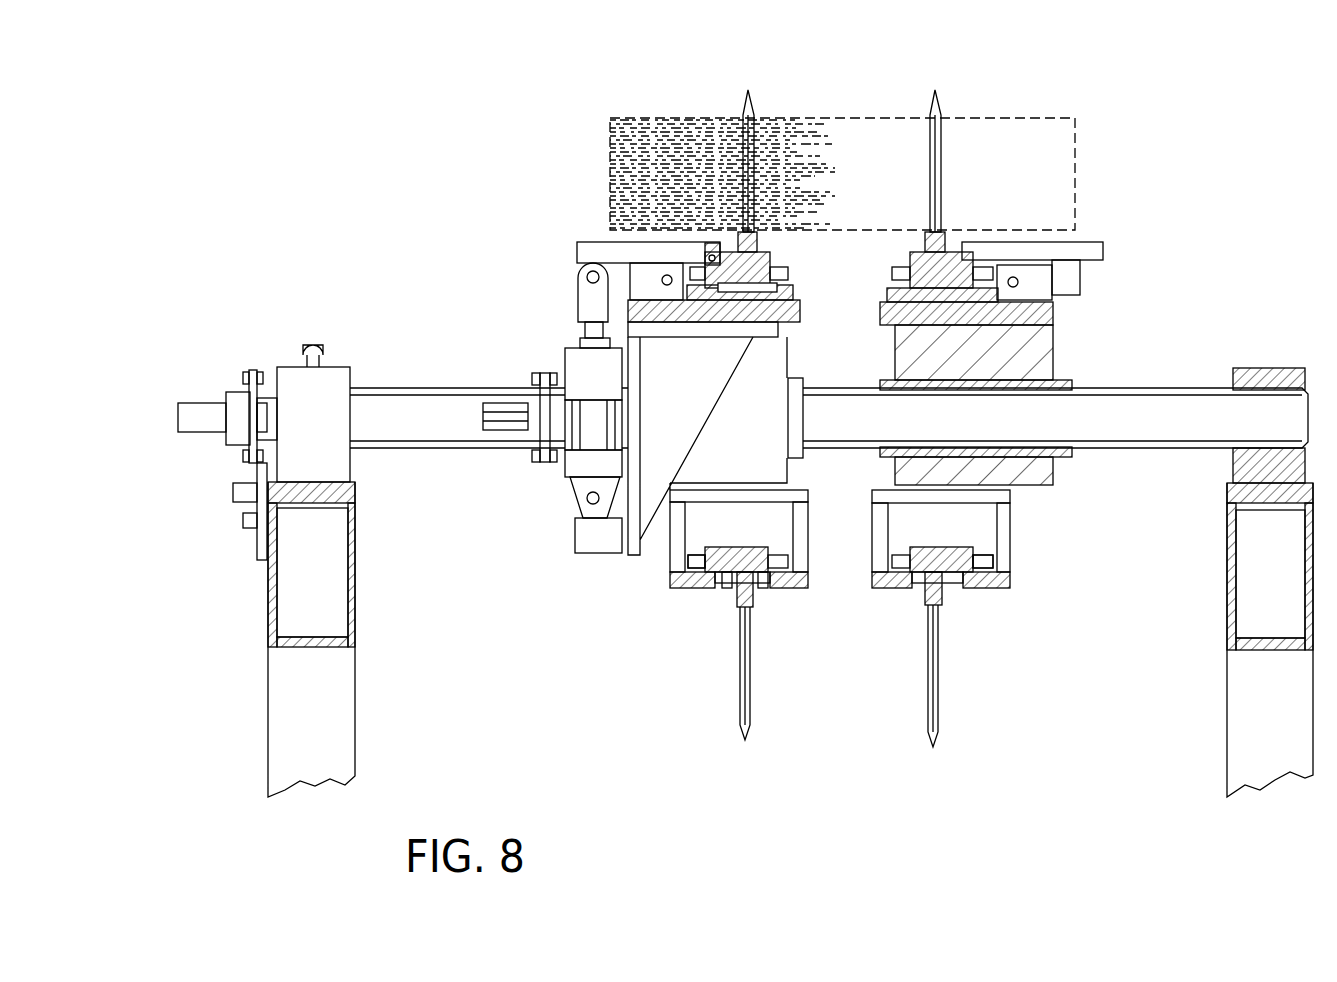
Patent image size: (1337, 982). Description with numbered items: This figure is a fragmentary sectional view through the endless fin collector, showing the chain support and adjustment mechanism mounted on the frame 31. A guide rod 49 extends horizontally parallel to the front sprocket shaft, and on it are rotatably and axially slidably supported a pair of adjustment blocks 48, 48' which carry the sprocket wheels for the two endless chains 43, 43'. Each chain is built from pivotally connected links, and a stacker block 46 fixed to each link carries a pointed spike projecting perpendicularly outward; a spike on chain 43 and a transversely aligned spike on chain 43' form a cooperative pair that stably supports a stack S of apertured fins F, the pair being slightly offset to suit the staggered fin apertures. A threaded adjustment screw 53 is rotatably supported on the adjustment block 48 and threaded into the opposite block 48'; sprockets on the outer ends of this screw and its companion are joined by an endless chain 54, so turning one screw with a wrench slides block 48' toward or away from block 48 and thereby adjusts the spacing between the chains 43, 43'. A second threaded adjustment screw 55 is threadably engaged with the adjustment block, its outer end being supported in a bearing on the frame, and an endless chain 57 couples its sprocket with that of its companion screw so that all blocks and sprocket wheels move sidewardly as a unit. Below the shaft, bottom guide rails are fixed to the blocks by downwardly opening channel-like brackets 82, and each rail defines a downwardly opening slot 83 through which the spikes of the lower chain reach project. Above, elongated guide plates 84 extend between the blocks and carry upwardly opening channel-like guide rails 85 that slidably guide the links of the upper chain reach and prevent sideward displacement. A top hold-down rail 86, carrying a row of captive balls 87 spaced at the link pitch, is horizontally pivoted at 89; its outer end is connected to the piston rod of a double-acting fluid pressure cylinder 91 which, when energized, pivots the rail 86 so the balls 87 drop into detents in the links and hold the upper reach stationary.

The frame 31 is at (1245, 708).
The endless chain 43 is at (691, 643).
The endless chain 43' is at (988, 616).
The stacker block 46 is at (929, 594).
The adjustment block 48 is at (737, 446).
The adjustment block 48' is at (1002, 393).
The guide rod 49 is at (1160, 400).
The threaded adjustment screw 53 is at (532, 427).
The endless chain 54 is at (545, 467).
The threaded adjustment screw 55 is at (210, 410).
The endless chain 57 is at (252, 377).
The channel-like bracket 82 is at (764, 531).
The slot 83 is at (717, 583).
The guide plate 84 is at (882, 318).
The guide rail 85 is at (785, 293).
The top hold-down rail 86 is at (590, 247).
The ball 87 is at (712, 257).
The pivot 89 is at (665, 287).
The double-acting fluid pressure cylinder 91 is at (582, 373).
The fin F is at (652, 117).
The stack S is at (600, 146).